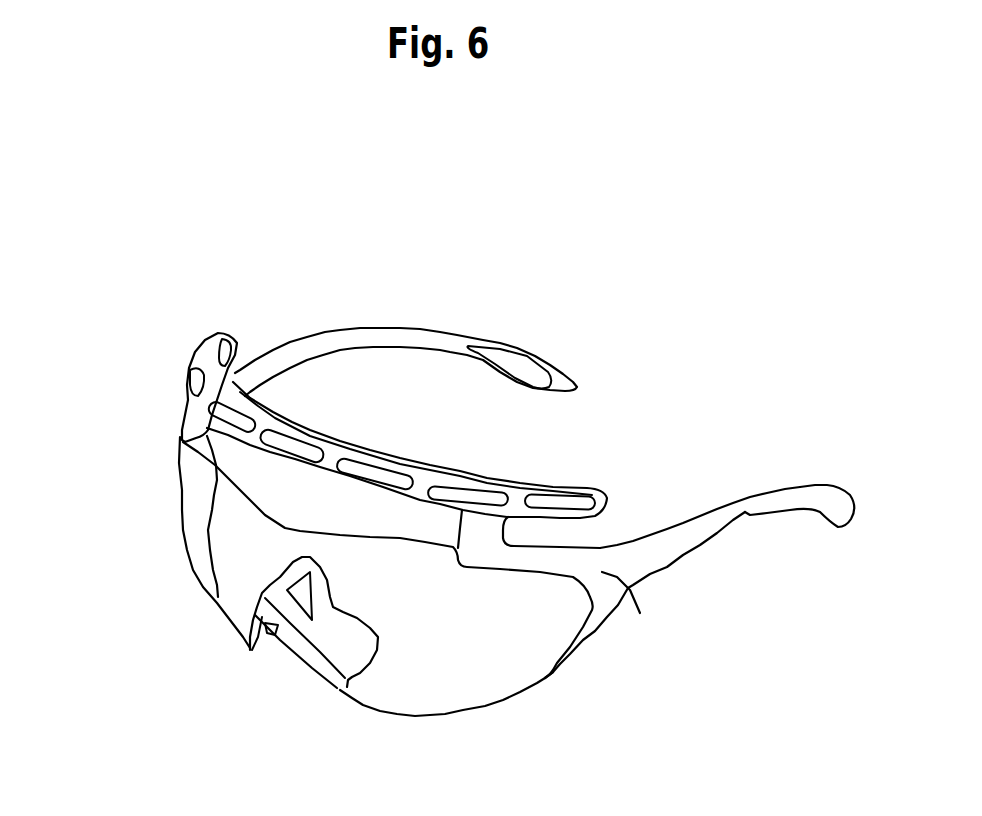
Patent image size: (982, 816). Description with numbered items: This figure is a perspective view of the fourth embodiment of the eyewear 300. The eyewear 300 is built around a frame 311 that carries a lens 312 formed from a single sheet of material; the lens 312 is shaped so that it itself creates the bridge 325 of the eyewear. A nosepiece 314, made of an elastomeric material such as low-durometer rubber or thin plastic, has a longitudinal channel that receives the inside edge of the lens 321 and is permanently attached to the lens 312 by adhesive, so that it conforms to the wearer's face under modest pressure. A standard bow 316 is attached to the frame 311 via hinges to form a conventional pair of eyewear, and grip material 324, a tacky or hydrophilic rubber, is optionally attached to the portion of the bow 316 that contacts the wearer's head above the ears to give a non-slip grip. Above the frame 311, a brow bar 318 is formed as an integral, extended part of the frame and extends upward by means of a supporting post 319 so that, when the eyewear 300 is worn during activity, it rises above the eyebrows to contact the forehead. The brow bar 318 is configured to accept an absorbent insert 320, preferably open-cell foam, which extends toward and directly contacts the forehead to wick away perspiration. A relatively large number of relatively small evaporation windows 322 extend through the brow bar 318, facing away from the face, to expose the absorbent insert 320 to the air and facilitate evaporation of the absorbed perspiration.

The eyewear 300 is at (472, 536).
The frame 311 is at (141, 408).
The lens 312 is at (391, 616).
The nosepiece 314 is at (333, 702).
The bow 316 is at (822, 540).
The brow bar 318 is at (722, 547).
The supporting post 319 is at (668, 631).
The absorbent insert 320 is at (407, 465).
The inside edge of lens 321 is at (228, 616).
The evaporation window 322 is at (400, 438).
The grip material 324 is at (431, 336).
The bridge 325 is at (241, 673).